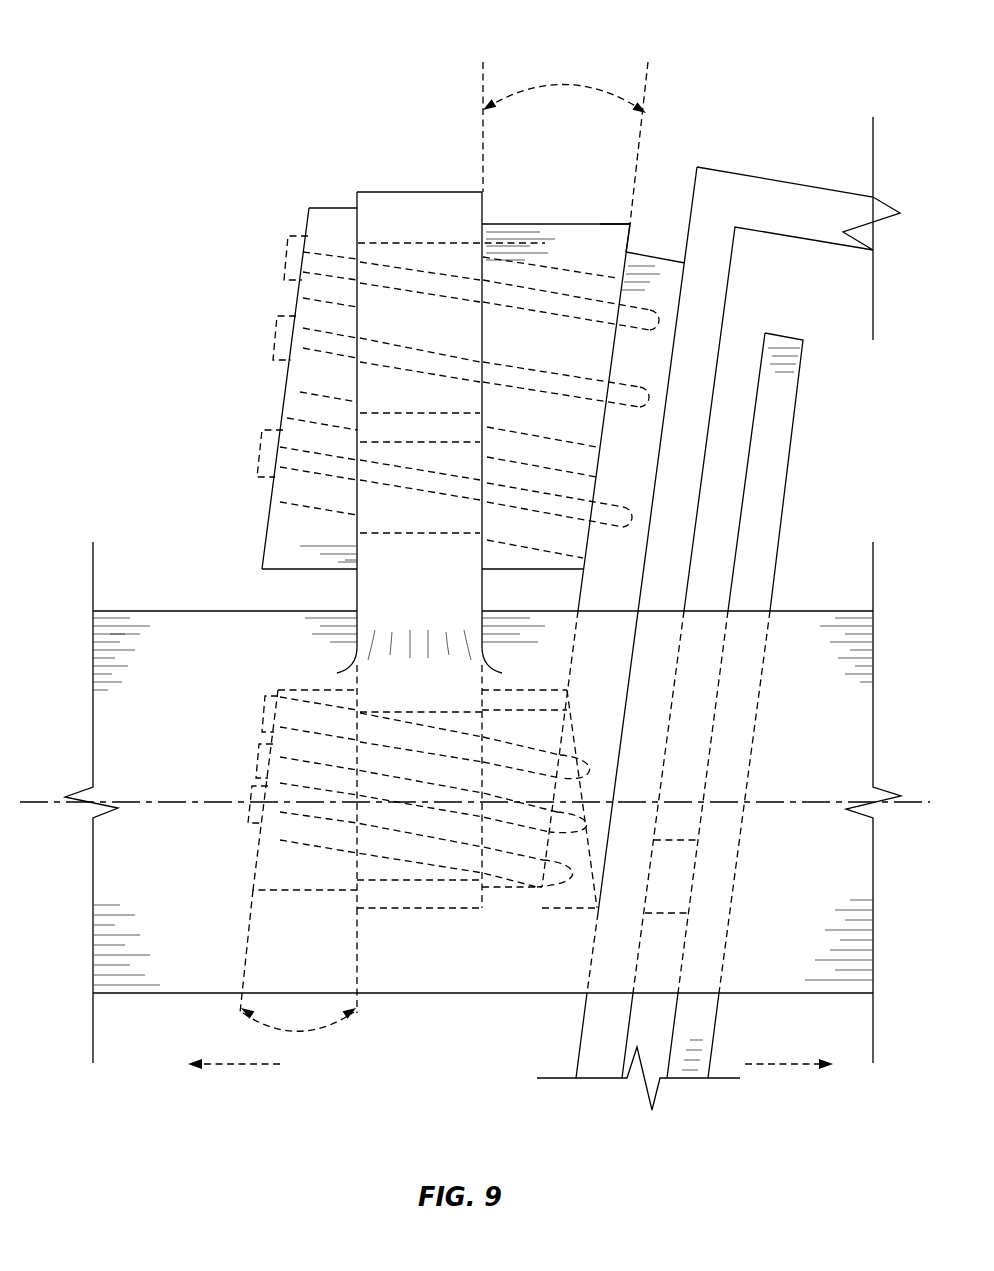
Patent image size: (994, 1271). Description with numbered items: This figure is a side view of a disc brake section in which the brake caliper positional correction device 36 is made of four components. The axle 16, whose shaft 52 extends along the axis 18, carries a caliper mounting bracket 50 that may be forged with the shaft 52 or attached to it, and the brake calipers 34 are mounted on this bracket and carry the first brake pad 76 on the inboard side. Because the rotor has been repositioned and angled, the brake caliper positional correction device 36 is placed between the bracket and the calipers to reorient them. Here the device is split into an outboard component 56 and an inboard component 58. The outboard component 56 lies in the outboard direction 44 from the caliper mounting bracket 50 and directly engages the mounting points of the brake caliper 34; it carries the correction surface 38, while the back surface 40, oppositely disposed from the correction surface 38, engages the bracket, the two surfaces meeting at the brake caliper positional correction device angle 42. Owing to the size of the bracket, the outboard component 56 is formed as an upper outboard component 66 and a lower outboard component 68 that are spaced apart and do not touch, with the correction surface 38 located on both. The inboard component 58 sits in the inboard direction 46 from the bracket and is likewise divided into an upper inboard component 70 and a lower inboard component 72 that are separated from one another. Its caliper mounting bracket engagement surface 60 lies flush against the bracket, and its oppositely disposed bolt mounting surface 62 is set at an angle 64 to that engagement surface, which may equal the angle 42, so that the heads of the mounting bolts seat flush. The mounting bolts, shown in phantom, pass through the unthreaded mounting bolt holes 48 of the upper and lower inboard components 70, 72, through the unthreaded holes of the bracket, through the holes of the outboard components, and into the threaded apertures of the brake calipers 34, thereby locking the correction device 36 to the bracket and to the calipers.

The axle 16 is at (853, 908).
The axis of the axle 18 is at (790, 802).
The brake calipers 34 is at (782, 197).
The brake caliper positional correction device 36 is at (500, 238).
The correction surface 38 is at (645, 232).
The back surface 40 is at (466, 232).
The brake caliper positional correction device angle 42 is at (556, 84).
The outboard direction 44 is at (783, 1066).
The inboard direction 46 is at (240, 1066).
The mounting bolt holes 48 is at (336, 222).
The caliper mounting bracket 50 is at (387, 558).
The shaft 52 is at (226, 963).
The outboard component 56 is at (582, 245).
The inboard component 58 is at (275, 528).
The caliper mounting bracket engagement surface 60 is at (372, 224).
The bolt mounting surface 62 is at (293, 222).
The angle 64 is at (327, 1030).
The upper outboard component 66 is at (624, 222).
The lower outboard component 68 is at (549, 686).
The upper inboard component 70 is at (262, 578).
The lower inboard component 72 is at (318, 688).
The first brake pad 76 is at (778, 348).